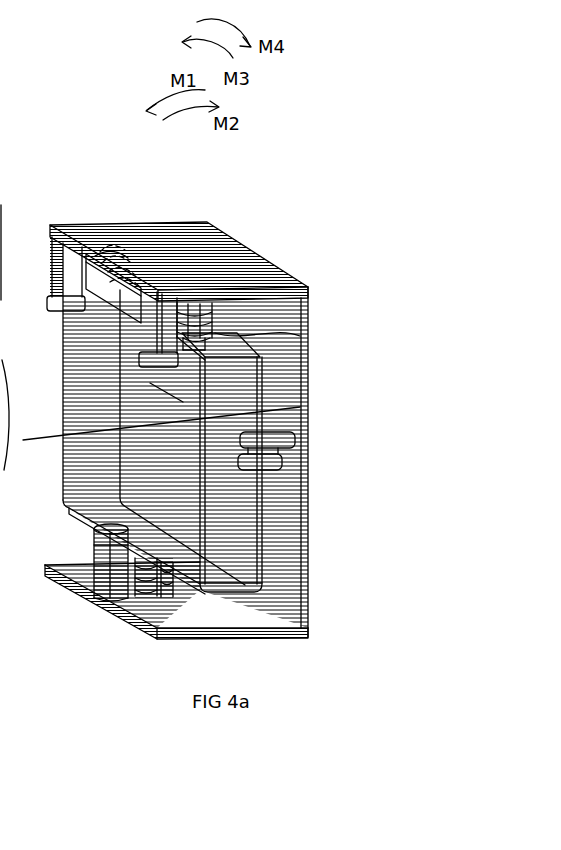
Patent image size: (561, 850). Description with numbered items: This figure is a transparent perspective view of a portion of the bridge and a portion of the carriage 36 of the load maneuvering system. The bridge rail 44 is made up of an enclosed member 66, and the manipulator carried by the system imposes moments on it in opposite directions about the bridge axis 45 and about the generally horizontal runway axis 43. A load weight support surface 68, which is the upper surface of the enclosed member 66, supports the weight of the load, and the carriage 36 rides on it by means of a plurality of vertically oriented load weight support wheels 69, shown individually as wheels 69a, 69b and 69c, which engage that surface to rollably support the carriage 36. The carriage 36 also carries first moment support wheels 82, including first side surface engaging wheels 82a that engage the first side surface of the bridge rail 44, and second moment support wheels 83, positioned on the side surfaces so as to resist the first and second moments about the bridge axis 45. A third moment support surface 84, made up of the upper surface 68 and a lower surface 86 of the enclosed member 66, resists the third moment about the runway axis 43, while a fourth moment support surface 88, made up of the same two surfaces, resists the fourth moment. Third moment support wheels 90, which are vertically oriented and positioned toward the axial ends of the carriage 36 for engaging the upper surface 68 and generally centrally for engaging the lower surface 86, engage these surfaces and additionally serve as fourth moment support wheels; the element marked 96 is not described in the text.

The carriage 36 is at (310, 556).
The runway axis 43 is at (318, 405).
The bridge rail 44 is at (250, 562).
The bridge axis 45 is at (270, 485).
The enclosed member 66 is at (282, 535).
The load weight support surface 68 is at (300, 345).
The load weight support wheels 69 is at (155, 242).
The load weight support wheel 69a is at (262, 262).
The load weight support wheel 69b is at (262, 283).
The load weight support wheel 69c is at (105, 250).
The first moment support wheels 82 is at (33, 300).
The first side surface engaging wheels 82a is at (147, 413).
The second moment support wheels 83 is at (97, 535).
The third moment support surface 84 is at (34, 404).
The lower surface 86 is at (7, 398).
The fourth moment support surface 88 is at (58, 388).
The third moment support wheels 90 is at (148, 590).
The frame 96 is at (11, 233).